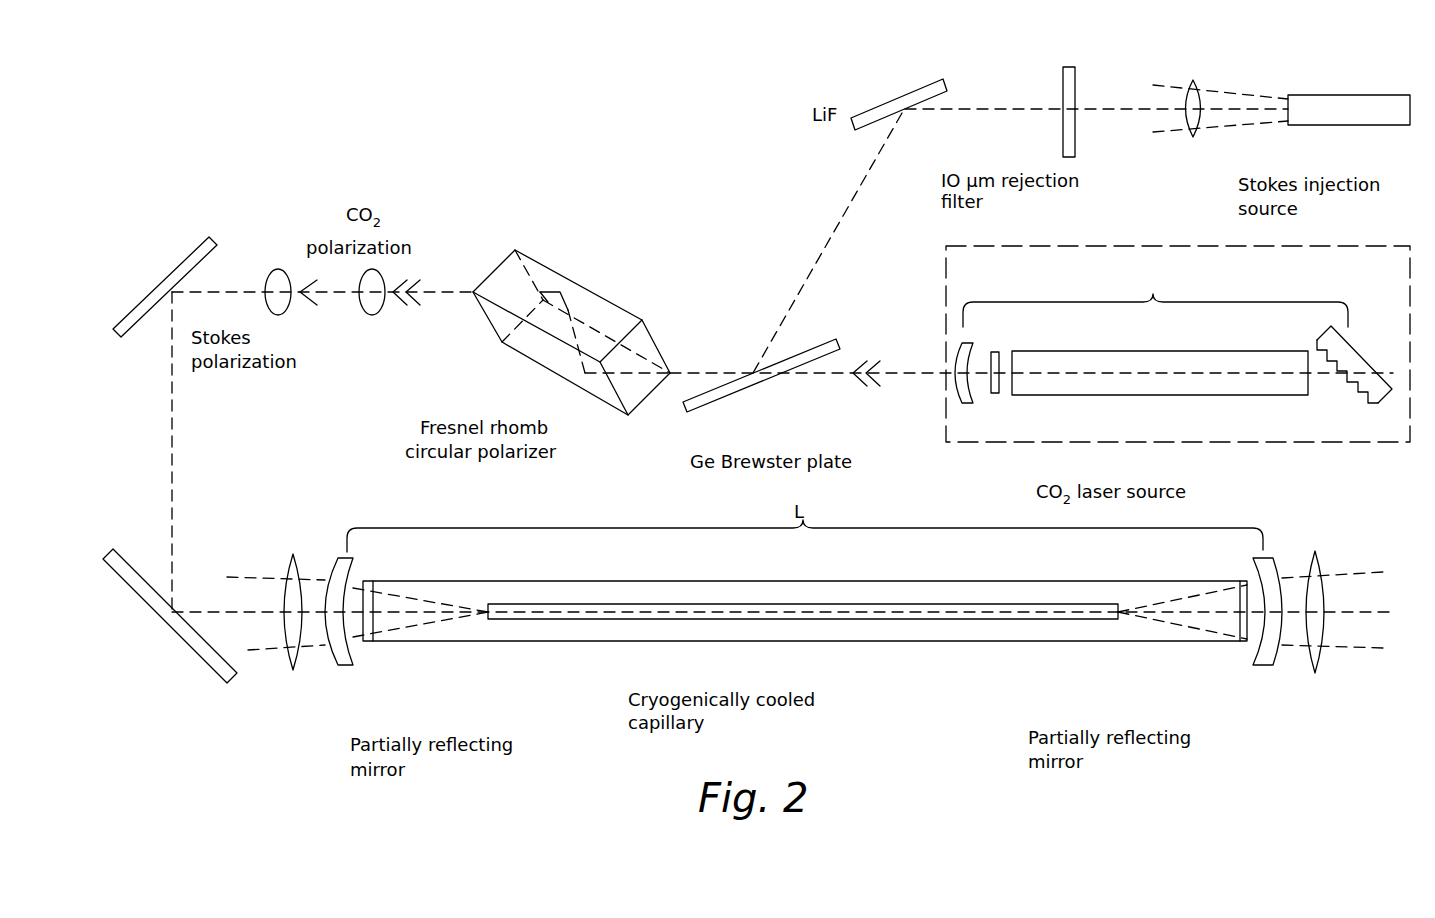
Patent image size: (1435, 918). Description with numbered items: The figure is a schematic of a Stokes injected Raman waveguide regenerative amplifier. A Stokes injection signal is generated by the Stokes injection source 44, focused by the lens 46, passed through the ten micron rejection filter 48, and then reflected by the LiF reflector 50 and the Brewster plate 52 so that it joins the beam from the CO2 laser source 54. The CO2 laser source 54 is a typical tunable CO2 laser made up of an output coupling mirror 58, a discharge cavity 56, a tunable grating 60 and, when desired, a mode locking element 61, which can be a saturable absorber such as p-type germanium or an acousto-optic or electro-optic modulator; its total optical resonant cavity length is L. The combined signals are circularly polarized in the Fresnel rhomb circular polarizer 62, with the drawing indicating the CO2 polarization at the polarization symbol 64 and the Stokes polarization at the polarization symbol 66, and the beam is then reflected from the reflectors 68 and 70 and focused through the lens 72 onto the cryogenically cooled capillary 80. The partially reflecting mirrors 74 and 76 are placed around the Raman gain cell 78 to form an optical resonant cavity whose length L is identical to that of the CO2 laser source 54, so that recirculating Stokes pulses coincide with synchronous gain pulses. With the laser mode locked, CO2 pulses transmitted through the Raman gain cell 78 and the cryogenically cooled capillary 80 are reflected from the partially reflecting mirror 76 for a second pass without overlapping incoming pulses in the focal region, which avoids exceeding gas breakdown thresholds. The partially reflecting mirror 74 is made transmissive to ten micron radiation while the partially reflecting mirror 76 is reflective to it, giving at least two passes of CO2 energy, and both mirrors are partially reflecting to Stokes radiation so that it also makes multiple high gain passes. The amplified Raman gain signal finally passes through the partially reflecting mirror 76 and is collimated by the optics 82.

The Stokes injection source 44 is at (1358, 126).
The lens 46 is at (1193, 90).
The 10 μm rejection filter 48 is at (1062, 117).
The LiF reflector 50 is at (892, 98).
The Brewster plate 52 is at (742, 394).
The CO2 laser source 54 is at (1082, 443).
The discharge cavity 56 is at (1146, 396).
The output coupling mirror 58 is at (970, 404).
The tunable grating 60 is at (1367, 388).
The mode locking element 61 is at (998, 352).
The Fresnel rhomb circular polarizer 62 is at (540, 345).
The CO2 polarization indicator 64 is at (381, 309).
The Stokes polarization indicator 66 is at (273, 272).
The reflector 68 is at (178, 264).
The reflector 70 is at (190, 648).
The lens 72 is at (290, 669).
The partially reflecting mirror 74 is at (347, 664).
The partially reflecting mirror 76 is at (1257, 663).
The Raman gain cell 78 is at (1003, 641).
The cryogenically cooled capillary 80 is at (702, 620).
The optics 82 is at (1318, 661).